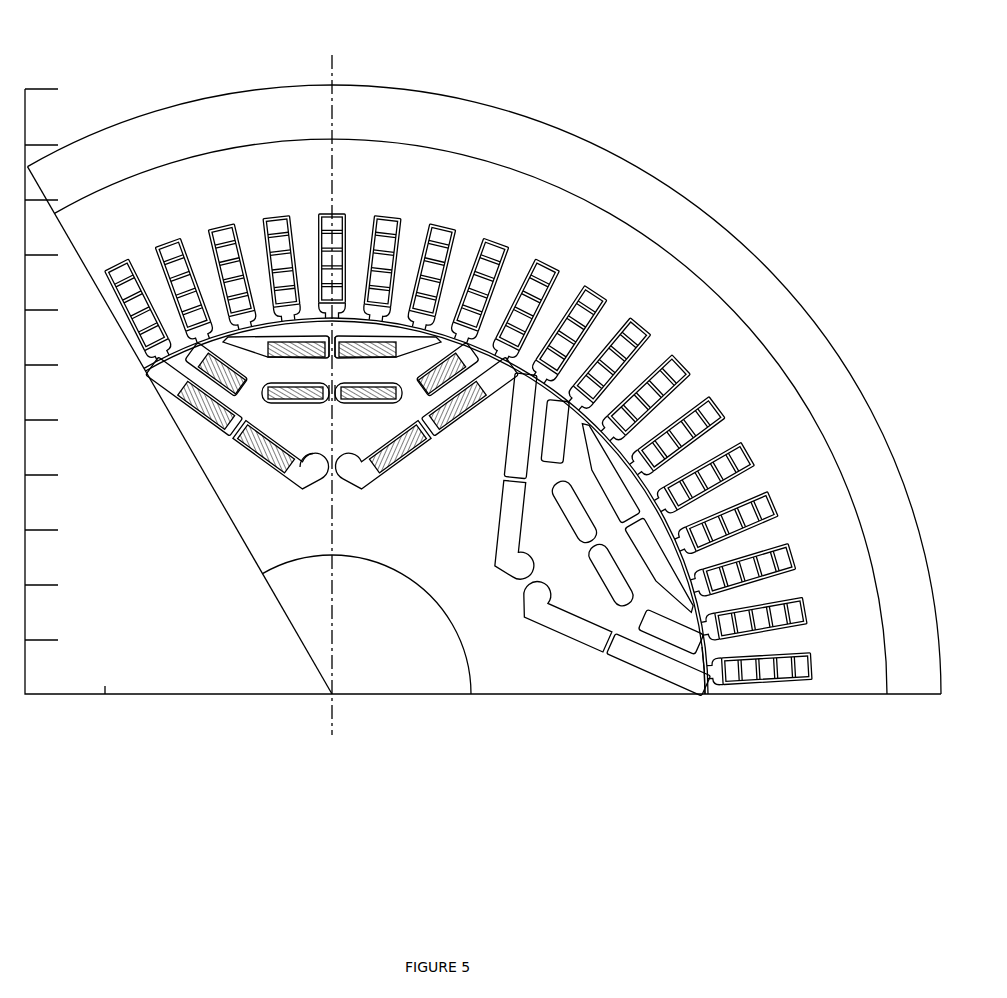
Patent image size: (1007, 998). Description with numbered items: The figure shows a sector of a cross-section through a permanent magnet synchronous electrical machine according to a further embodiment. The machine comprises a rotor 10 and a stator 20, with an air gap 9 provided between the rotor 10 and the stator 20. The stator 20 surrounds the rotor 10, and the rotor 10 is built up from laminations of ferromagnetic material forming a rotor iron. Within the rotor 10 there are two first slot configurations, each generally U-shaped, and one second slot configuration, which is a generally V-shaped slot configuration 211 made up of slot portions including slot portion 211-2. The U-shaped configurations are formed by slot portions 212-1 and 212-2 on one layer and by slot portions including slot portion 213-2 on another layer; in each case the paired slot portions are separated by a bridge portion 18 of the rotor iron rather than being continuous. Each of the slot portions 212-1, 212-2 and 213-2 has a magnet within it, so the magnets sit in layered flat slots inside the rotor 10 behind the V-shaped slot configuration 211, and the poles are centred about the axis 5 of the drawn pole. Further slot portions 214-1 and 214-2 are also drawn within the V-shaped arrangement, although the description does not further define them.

The pole center axis / section line 5 is at (330, 74).
The air gap 9 is at (705, 698).
The rotor 10 is at (589, 714).
The bridge portion 18 is at (331, 336).
The stator 20 is at (777, 708).
The V-shaped slot configuration 211 is at (311, 476).
The slot portion 211-2 is at (431, 446).
The slot portion 212-1 is at (287, 398).
The slot portion 212-2 is at (371, 403).
The slot portion 213-2 is at (356, 344).
The inner V-layer permanent magnet 214-1 is at (273, 455).
The inner V-layer permanent magnet 214-2 is at (397, 458).